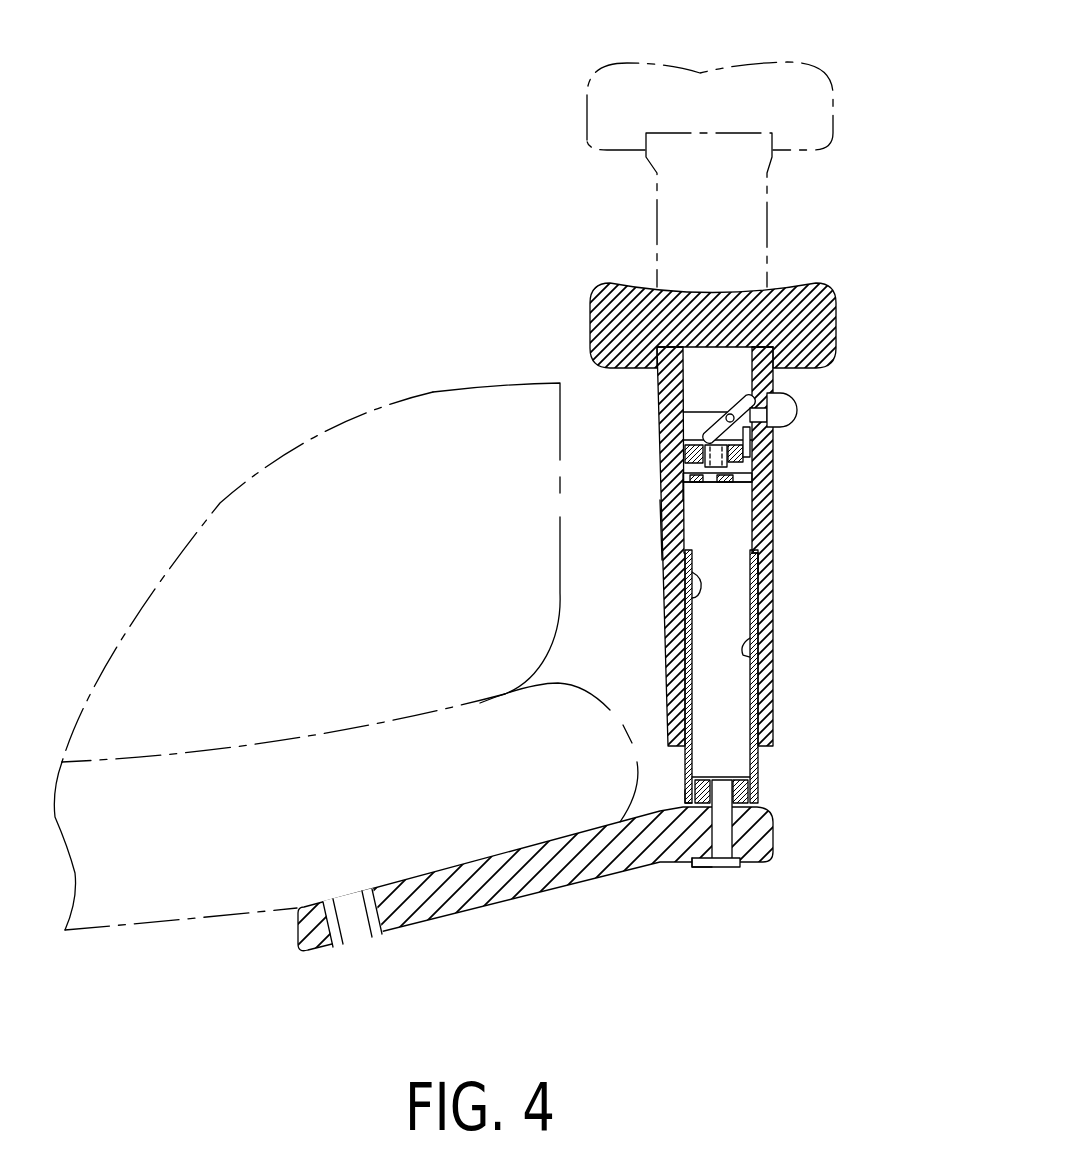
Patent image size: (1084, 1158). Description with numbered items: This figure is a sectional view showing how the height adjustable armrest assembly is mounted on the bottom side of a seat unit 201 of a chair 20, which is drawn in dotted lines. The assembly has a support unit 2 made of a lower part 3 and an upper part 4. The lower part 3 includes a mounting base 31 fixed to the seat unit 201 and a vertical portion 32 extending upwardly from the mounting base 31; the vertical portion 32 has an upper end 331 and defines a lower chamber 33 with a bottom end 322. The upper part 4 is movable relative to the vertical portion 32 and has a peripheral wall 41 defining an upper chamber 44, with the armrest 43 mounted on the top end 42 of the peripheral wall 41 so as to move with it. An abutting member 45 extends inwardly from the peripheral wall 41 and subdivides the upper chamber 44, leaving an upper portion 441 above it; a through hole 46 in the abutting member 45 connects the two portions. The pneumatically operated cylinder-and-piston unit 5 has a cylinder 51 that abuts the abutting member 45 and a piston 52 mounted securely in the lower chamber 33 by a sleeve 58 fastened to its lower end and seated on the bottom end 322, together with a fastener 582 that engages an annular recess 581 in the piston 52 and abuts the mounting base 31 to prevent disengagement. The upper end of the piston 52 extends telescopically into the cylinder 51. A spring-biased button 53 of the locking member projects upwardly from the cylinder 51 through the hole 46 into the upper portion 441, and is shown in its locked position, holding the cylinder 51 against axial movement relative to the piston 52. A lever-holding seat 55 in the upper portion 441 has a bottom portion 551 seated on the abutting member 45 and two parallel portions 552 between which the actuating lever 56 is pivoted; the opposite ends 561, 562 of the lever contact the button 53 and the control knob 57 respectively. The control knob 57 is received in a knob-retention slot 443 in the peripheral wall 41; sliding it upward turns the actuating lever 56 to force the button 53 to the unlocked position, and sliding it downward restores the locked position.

The support unit 2 is at (707, 290).
The chair 20 is at (437, 390).
The seat unit 201 is at (197, 873).
The lower part 3 is at (571, 885).
The mounting base 31 is at (502, 872).
The vertical portion 32 is at (739, 676).
The bottom end 322 is at (687, 767).
The lower chamber 33 is at (748, 651).
The upper end 331 is at (667, 618).
The upper part 4 is at (720, 488).
The peripheral wall 41 is at (668, 528).
The top end 42 is at (660, 352).
The armrest 43 is at (823, 306).
The upper chamber 44 is at (759, 552).
The upper portion 441 is at (757, 345).
The knob-retention slot 443 is at (775, 433).
The abutting member 45 is at (688, 506).
The through hole 46 is at (724, 486).
The pneumatically operated cylinder-and-piston unit 5 is at (729, 717).
The cylinder 51 is at (718, 690).
The piston 52 is at (722, 838).
The spring-biased button 53 is at (665, 484).
The lever-holding seat 55 is at (717, 412).
The bottom portion 551 is at (708, 462).
The parallel portions 552 is at (687, 435).
The actuating lever 56 is at (707, 333).
The end 561 is at (752, 455).
The end 562 is at (743, 392).
The control knob 57 is at (798, 411).
The sleeve 58 is at (749, 785).
The annular recess 581 is at (734, 860).
The fastener 582 is at (702, 867).